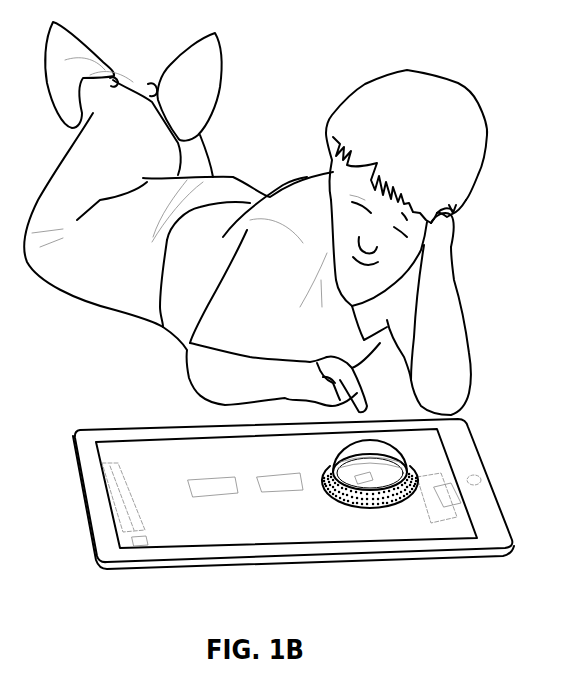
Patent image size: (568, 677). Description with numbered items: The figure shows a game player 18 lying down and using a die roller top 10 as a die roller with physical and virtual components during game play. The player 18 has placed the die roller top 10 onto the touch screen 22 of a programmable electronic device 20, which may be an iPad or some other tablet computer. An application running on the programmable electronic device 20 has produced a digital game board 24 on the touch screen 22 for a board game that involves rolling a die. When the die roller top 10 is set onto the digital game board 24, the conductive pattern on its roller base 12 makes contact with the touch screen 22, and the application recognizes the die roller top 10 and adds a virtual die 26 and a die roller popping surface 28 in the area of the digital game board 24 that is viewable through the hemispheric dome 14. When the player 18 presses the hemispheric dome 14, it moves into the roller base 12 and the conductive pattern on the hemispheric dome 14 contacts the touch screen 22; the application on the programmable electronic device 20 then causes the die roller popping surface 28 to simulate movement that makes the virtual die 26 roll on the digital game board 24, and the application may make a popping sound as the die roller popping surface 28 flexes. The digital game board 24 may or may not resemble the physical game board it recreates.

The die roller top 10 is at (313, 490).
The roller base 12 is at (309, 490).
The hemispheric dome 14 is at (325, 456).
The game player 18 is at (461, 283).
The programmable electronic device 20 is at (311, 501).
The touch screen 22 is at (288, 501).
The digital game board 24 is at (210, 495).
The virtual die 26 is at (402, 505).
The die roller popping surface 28 is at (326, 498).